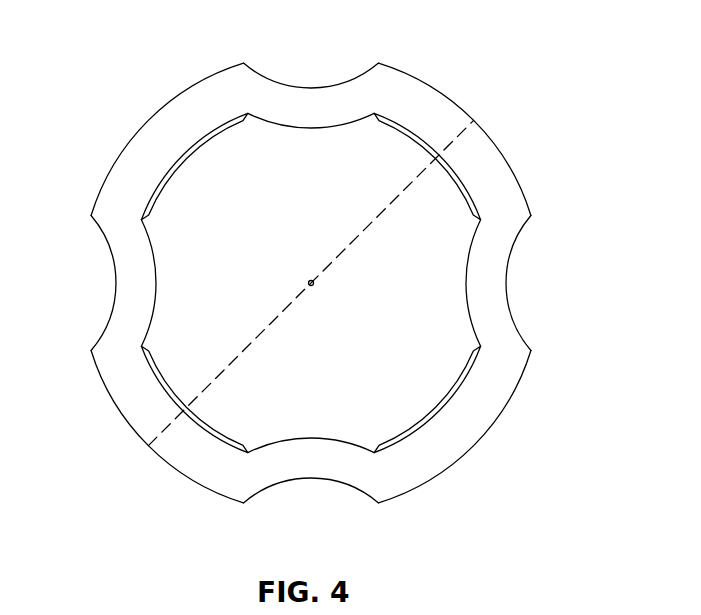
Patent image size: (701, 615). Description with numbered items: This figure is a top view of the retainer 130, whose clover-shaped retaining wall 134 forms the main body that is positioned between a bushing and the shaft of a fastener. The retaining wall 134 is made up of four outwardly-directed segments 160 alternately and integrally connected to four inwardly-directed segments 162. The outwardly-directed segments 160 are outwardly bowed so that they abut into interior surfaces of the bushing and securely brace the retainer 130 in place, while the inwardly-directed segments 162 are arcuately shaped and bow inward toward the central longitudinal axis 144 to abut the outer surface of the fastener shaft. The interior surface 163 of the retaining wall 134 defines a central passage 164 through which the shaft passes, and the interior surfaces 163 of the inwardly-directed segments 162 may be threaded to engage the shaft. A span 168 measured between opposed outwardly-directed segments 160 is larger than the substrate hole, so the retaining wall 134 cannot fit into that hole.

The retainer 130 is at (565, 80).
The retaining wall 134 is at (512, 167).
The central longitudinal axis 144 is at (314, 286).
The outwardly-directed segments 160 is at (158, 108).
The inwardly-directed segments 162 is at (316, 90).
The interior surface 163 is at (323, 127).
The central passage 164 is at (267, 200).
The span 168 is at (270, 322).